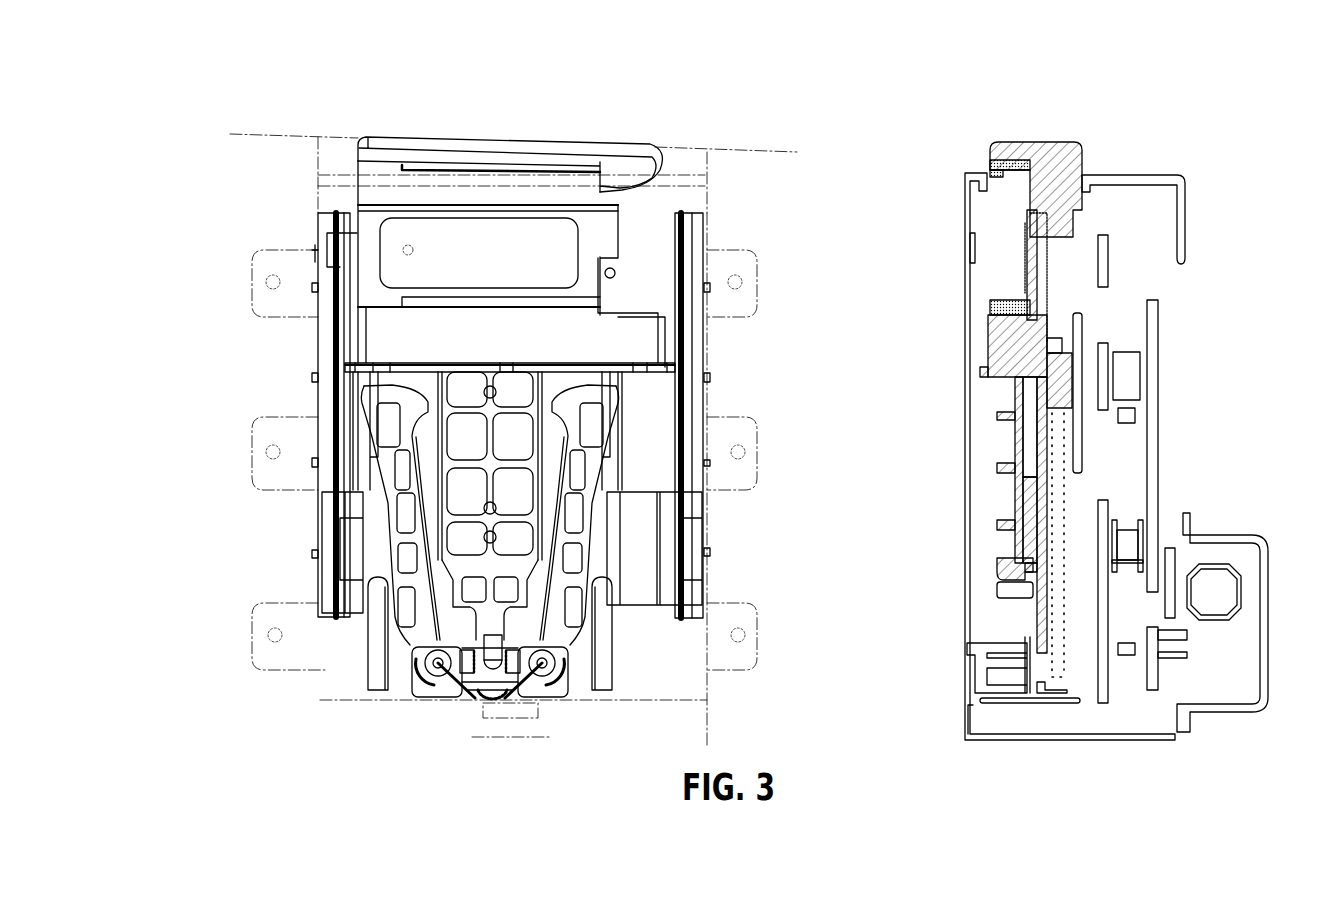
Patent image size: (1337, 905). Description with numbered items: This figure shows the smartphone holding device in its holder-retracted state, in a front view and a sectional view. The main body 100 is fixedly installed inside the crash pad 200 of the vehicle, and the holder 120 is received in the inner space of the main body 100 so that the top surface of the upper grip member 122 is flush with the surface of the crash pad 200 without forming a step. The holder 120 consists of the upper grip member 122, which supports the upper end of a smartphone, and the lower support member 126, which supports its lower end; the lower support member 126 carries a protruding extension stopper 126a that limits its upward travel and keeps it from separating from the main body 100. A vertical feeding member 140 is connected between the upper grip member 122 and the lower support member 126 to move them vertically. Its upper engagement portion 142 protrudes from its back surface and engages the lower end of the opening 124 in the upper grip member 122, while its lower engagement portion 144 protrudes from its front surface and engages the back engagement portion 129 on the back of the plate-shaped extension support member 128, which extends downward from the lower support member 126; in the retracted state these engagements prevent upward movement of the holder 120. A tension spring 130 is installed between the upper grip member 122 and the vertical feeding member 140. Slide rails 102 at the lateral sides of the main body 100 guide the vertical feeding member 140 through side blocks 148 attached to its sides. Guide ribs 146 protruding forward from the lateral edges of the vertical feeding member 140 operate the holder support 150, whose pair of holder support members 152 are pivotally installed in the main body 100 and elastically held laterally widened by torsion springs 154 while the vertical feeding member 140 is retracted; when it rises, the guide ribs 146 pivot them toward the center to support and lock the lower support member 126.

The main body 100 is at (703, 193).
The slide rails 102 is at (688, 393).
The holder 120 is at (555, 62).
The upper grip member 122 is at (480, 148).
The opening 124 is at (1057, 272).
The lower support member 126 is at (702, 222).
The extension stopper 126a is at (936, 366).
The extension support member 128 is at (533, 517).
The back engagement portion 129 is at (1030, 572).
The tension spring 130 is at (1065, 502).
The vertical feeding member 140 is at (557, 495).
The upper engagement portion 142 is at (1060, 343).
The lower engagement portion 144 is at (1033, 537).
The guide ribs 146 is at (380, 593).
The side blocks 148 is at (355, 547).
The holder support 150 is at (232, 676).
The holder support members 152 is at (410, 610).
The torsion springs 154 is at (473, 690).
The crash pad 200 is at (710, 148).